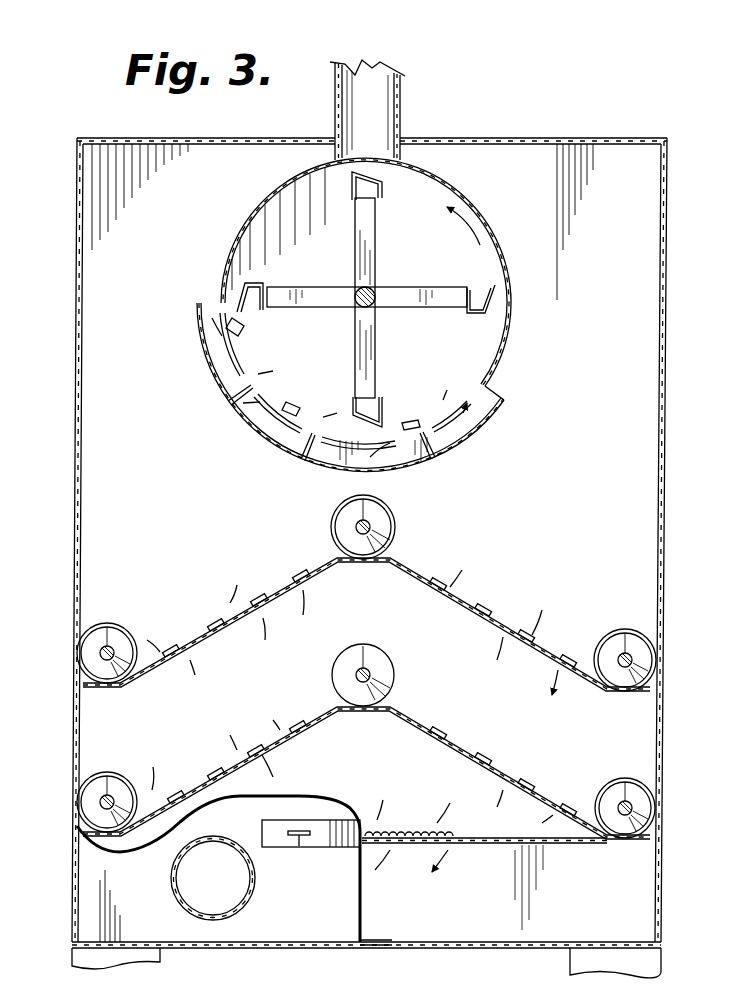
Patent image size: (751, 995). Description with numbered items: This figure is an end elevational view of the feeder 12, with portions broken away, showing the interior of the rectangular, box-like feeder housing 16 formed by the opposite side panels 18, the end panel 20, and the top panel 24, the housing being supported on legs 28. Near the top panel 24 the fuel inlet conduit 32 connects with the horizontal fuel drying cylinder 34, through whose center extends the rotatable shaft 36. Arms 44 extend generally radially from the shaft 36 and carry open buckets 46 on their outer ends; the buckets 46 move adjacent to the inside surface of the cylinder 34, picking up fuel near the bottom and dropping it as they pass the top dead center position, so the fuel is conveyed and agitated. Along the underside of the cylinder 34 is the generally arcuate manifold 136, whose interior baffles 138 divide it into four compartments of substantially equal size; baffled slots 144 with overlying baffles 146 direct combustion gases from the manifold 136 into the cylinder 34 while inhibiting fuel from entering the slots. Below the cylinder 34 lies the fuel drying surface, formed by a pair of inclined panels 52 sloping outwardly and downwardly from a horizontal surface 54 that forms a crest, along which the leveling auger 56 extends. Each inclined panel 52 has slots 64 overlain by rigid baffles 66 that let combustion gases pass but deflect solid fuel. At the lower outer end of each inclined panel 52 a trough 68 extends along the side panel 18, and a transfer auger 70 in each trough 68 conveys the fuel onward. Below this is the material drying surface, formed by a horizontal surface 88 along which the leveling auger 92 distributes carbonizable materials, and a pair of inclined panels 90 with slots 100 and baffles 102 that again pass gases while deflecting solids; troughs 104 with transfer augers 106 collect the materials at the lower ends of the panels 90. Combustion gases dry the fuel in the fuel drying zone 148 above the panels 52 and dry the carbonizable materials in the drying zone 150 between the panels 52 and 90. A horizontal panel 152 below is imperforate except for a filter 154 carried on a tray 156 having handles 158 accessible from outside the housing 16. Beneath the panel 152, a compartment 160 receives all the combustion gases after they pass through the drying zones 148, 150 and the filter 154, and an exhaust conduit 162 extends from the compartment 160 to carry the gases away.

The feeder 12 is at (395, 534).
The feeder housing 16 is at (582, 140).
The side panels 18 is at (84, 475).
The end panel 20 is at (340, 942).
The top panel 24 is at (478, 138).
The legs 28 is at (165, 948).
The fuel inlet conduit 32 is at (401, 90).
The fuel drying cylinder 34 is at (469, 196).
The shaft 36 is at (372, 292).
The arms 44 is at (356, 261).
The buckets 46 is at (384, 185).
The inclined panels 52 is at (404, 560).
The horizontal surface 54 is at (366, 608).
The leveling auger 56 is at (397, 515).
The slots 64 is at (190, 640).
The baffles 66 is at (290, 580).
The troughs 68 is at (111, 686).
The transfer augers 70 is at (109, 625).
The horizontal surface 88 is at (337, 705).
The inclined panels 90 is at (254, 748).
The leveling auger 92 is at (364, 646).
The slots 100 is at (274, 740).
The baffles 102 is at (290, 728).
The troughs 104 is at (112, 838).
The transfer augers 106 is at (106, 772).
The manifold 136 is at (392, 468).
The baffles 138 is at (232, 406).
The baffled slots 144 is at (242, 323).
The baffles 146 is at (257, 371).
The fuel drying zone 148 is at (531, 513).
The drying zone 150 is at (449, 677).
The horizontal panel 152 is at (502, 846).
The filter 154 is at (392, 825).
The tray 156 is at (311, 848).
The handles 158 is at (287, 849).
The compartment 160 is at (655, 903).
The exhaust conduit 162 is at (174, 890).